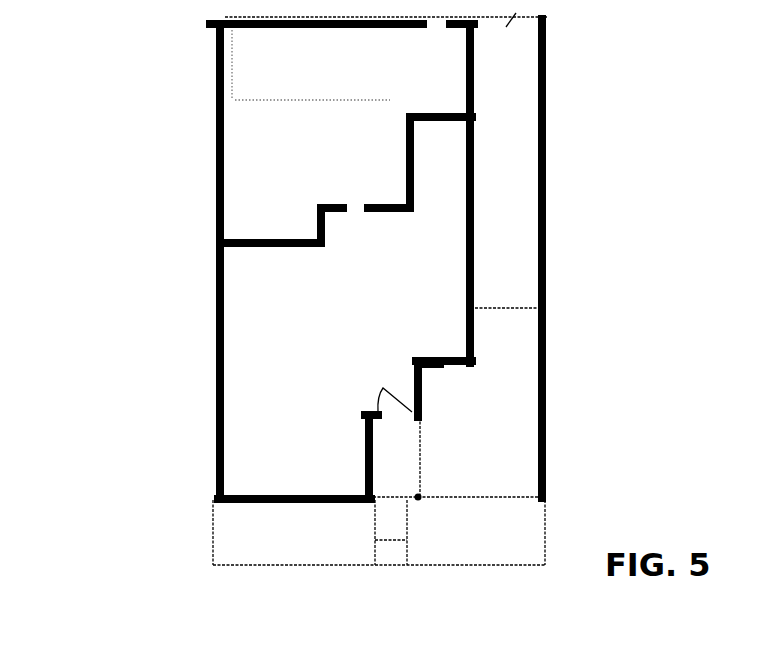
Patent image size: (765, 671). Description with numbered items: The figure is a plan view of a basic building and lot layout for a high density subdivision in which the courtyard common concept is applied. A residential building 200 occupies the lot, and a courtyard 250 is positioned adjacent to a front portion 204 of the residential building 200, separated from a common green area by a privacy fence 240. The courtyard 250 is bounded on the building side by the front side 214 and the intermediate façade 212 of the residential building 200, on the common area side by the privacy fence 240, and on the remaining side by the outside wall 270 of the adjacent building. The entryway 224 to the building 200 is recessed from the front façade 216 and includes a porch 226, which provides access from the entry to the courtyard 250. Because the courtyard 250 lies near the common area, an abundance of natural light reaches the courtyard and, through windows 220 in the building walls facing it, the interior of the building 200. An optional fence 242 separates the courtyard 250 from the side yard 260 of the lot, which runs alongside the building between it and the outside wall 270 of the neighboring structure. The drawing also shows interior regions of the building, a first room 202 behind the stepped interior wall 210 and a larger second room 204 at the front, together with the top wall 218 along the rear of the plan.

The residential building 200 is at (163, 255).
The first room 202 is at (367, 225).
The front portion 204 is at (245, 398).
The interior wall 210 is at (473, 193).
The intermediate façade 212 is at (450, 350).
The front side 214 is at (360, 428).
The front façade 216 is at (275, 502).
The top wall 218 is at (278, 35).
The windows 220 is at (433, 350).
The entryway 224 is at (370, 393).
The porch 226 is at (353, 500).
The privacy fence 240 is at (538, 563).
The fence 242 is at (509, 307).
The courtyard 250 is at (490, 410).
The side yard 260 is at (498, 133).
The outside wall 270 is at (545, 372).